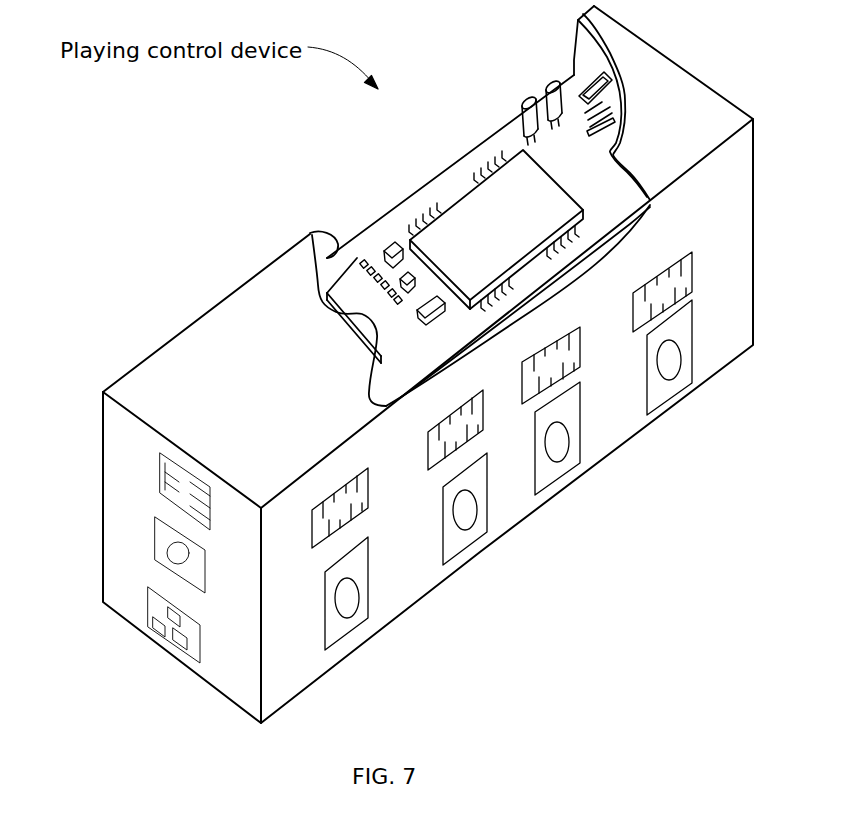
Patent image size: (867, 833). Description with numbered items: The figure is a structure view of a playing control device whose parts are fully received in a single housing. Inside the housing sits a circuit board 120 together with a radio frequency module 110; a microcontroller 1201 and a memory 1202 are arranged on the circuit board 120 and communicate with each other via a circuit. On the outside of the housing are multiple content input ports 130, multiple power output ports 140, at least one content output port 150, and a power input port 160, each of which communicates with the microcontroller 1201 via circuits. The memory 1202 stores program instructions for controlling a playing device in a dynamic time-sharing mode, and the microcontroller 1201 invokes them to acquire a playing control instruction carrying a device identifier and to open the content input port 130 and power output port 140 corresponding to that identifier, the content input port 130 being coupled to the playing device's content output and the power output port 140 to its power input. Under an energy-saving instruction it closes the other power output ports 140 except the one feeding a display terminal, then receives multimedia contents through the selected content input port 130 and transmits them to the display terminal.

The radio frequency module 110 is at (603, 131).
The circuit board 120 is at (600, 216).
The microcontroller 1201 is at (490, 229).
The memory 1202 is at (358, 285).
The content input port 130 is at (351, 505).
The power output port 140 is at (557, 438).
The content output port 150 is at (174, 463).
The power input port 160 is at (187, 630).